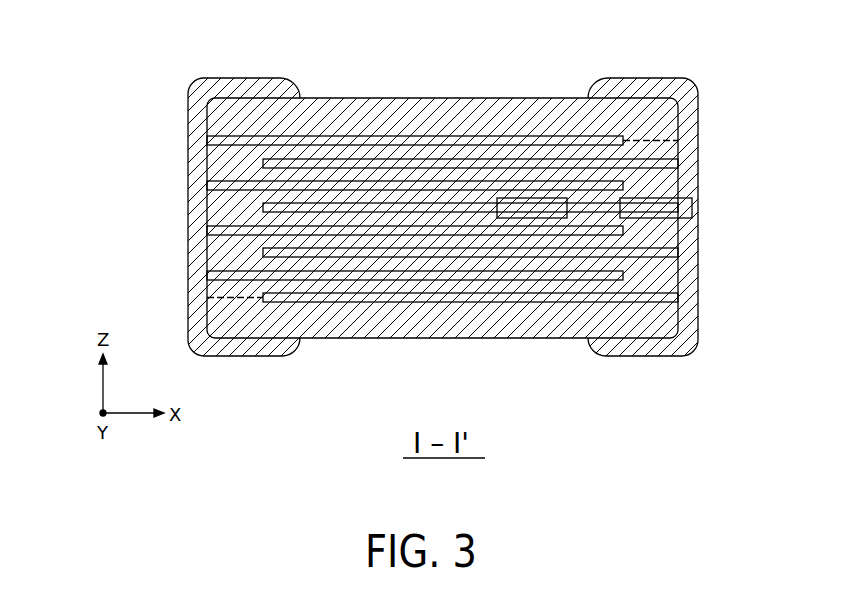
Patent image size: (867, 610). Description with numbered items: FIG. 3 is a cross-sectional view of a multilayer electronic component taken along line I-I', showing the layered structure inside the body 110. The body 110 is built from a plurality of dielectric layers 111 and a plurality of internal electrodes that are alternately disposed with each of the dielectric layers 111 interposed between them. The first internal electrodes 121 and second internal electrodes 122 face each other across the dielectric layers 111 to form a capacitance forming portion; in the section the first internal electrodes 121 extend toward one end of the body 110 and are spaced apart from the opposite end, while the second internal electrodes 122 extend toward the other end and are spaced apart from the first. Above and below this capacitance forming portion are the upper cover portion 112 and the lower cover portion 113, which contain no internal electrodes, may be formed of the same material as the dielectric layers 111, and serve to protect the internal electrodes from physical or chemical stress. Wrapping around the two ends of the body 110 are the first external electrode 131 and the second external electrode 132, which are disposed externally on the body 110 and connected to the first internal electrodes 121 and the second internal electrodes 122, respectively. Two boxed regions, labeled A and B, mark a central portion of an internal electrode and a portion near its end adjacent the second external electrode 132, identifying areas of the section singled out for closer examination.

The body 110 is at (378, 98).
The dielectric layer 111 is at (330, 175).
The upper cover portion 112 is at (448, 115).
The lower cover portion 113 is at (445, 325).
The first internal electrode 121 is at (513, 138).
The second internal electrode 122 is at (572, 160).
The first external electrode 131 is at (200, 162).
The second external electrode 132 is at (687, 148).
The region A is at (535, 218).
The region B is at (657, 218).